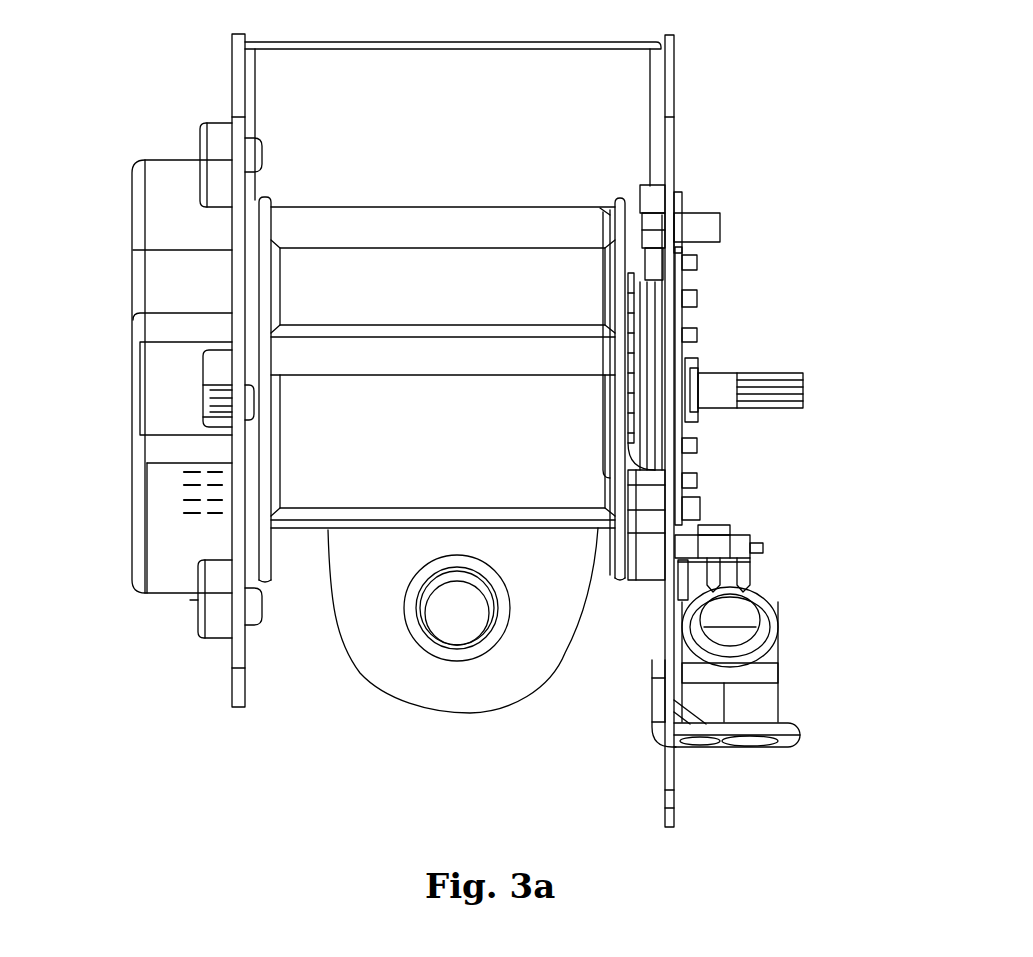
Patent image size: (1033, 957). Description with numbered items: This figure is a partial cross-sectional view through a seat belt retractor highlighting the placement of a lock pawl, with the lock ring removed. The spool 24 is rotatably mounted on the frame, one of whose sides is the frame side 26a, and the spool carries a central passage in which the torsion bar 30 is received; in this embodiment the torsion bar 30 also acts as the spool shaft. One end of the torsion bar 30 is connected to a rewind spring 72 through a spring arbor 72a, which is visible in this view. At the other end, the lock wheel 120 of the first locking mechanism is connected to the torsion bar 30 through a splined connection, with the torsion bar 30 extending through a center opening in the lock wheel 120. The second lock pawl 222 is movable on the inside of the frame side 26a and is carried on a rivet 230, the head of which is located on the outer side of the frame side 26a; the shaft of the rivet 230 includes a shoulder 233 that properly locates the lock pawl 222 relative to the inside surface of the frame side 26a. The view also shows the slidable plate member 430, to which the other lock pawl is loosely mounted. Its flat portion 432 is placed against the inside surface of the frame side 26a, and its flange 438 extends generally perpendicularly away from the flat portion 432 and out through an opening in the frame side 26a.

The spool 24 is at (527, 207).
The frame side 26a is at (672, 90).
The torsion bar 30 is at (718, 362).
The rewind spring 72 is at (175, 510).
The spring arbor 72a is at (223, 372).
The lock wheel 120 is at (638, 503).
The second lock pawl 222 is at (652, 200).
The rivet 230 is at (702, 220).
The shoulder 233 is at (652, 242).
The plate member 430 is at (780, 760).
The flat portion 432 is at (658, 693).
The flange 438 is at (722, 732).